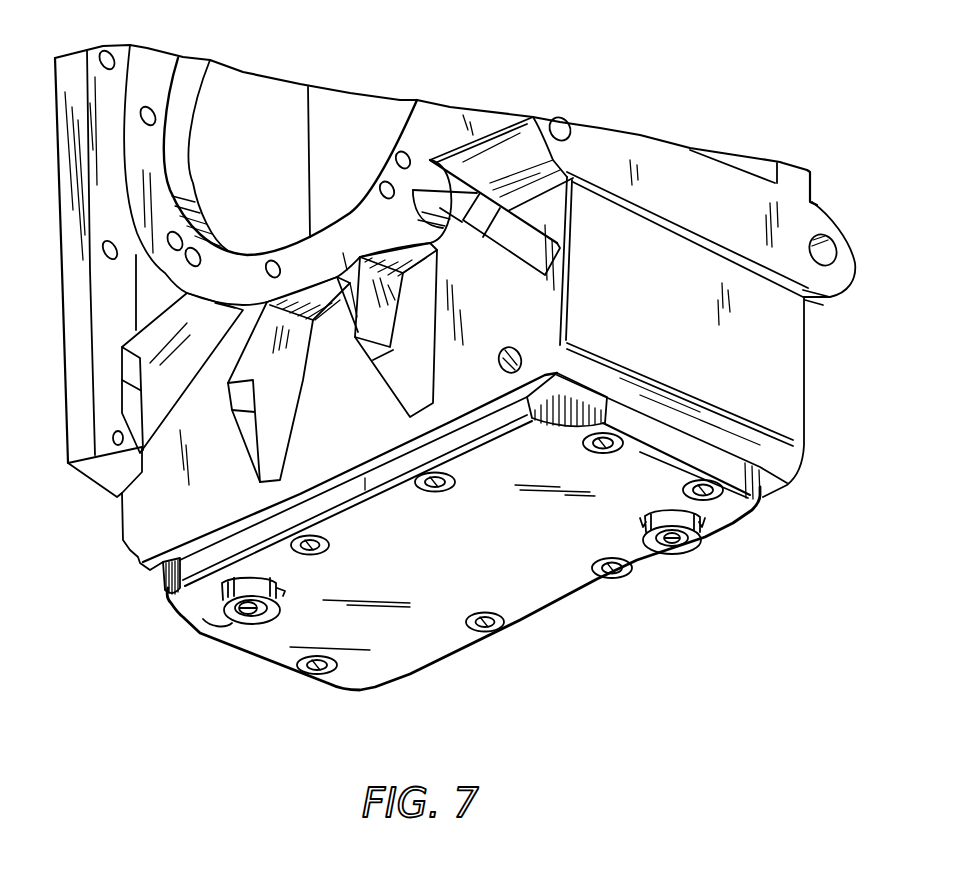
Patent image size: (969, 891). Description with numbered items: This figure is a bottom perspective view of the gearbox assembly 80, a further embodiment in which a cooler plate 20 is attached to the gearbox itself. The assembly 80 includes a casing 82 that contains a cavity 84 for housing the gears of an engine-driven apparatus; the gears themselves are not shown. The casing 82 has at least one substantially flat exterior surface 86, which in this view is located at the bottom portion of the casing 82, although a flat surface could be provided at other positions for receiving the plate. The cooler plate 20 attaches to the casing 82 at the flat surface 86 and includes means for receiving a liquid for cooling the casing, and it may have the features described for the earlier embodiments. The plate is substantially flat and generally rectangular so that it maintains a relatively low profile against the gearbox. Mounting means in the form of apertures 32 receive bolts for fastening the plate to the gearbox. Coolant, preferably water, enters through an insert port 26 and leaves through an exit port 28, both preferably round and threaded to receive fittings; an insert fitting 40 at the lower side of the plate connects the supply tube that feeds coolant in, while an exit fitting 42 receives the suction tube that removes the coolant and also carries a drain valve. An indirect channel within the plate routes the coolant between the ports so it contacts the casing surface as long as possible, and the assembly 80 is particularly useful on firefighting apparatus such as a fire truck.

The cooler plate 20 is at (397, 606).
The insert port 26 is at (667, 552).
The exit port 28 is at (257, 620).
The apertures 32 is at (428, 491).
The insert fitting 40 is at (693, 564).
The exit fitting 42 is at (240, 645).
The gearbox assembly 80 is at (455, 382).
The casing 82 is at (800, 398).
The cavity 84 is at (210, 164).
The flat exterior surface 86 is at (773, 492).